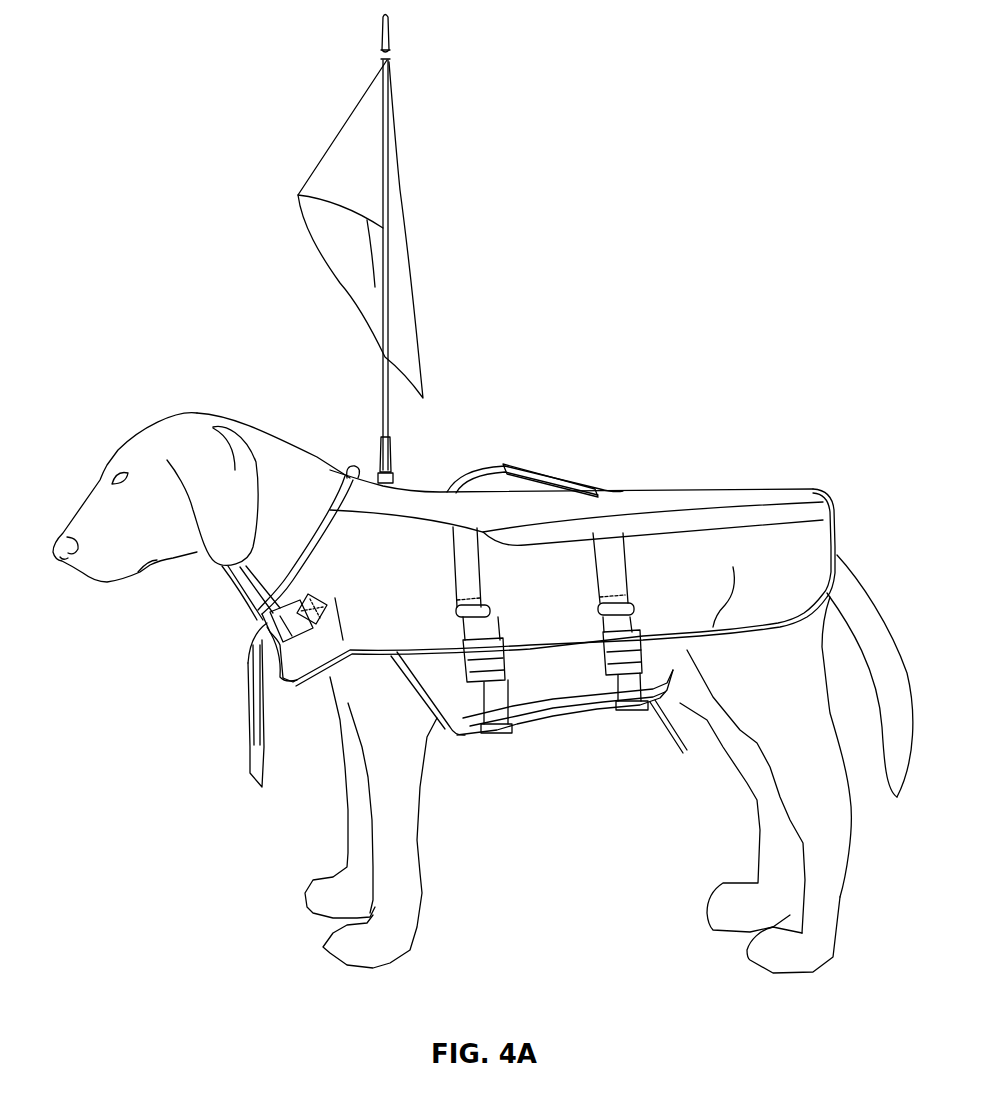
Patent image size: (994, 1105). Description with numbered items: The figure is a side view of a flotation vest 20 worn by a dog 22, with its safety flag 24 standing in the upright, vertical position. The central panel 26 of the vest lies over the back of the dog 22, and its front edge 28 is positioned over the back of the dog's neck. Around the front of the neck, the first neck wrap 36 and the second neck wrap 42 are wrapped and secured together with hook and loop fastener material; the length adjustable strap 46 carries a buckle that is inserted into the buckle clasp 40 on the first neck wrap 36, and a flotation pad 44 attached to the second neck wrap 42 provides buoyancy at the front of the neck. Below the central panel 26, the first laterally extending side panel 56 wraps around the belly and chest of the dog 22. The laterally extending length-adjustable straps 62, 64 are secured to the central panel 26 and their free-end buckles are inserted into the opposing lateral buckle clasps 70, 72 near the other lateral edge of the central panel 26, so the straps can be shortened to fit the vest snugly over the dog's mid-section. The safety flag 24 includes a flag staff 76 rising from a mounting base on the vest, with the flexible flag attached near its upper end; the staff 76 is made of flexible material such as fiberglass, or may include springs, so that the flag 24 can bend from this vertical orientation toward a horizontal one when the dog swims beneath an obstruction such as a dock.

The flotation vest 20 is at (703, 498).
The dog 22 is at (150, 412).
The safety flag 24 is at (437, 256).
The central panel 26 is at (506, 523).
The front edge 28 is at (325, 470).
The first neck wrap 36 is at (308, 685).
The buckle clasp 40 is at (308, 600).
The second neck wrap 42 is at (282, 662).
The flotation pad 44 is at (240, 600).
The length adjustable strap 46 is at (252, 748).
The first laterally extending side panel 56 is at (563, 717).
The laterally extending length-adjustable strap 62 is at (463, 577).
The laterally extending length-adjustable strap 64 is at (610, 577).
The lateral buckle clasp 70 is at (463, 640).
The lateral buckle clasp 72 is at (633, 647).
The flag staff 76 is at (391, 437).